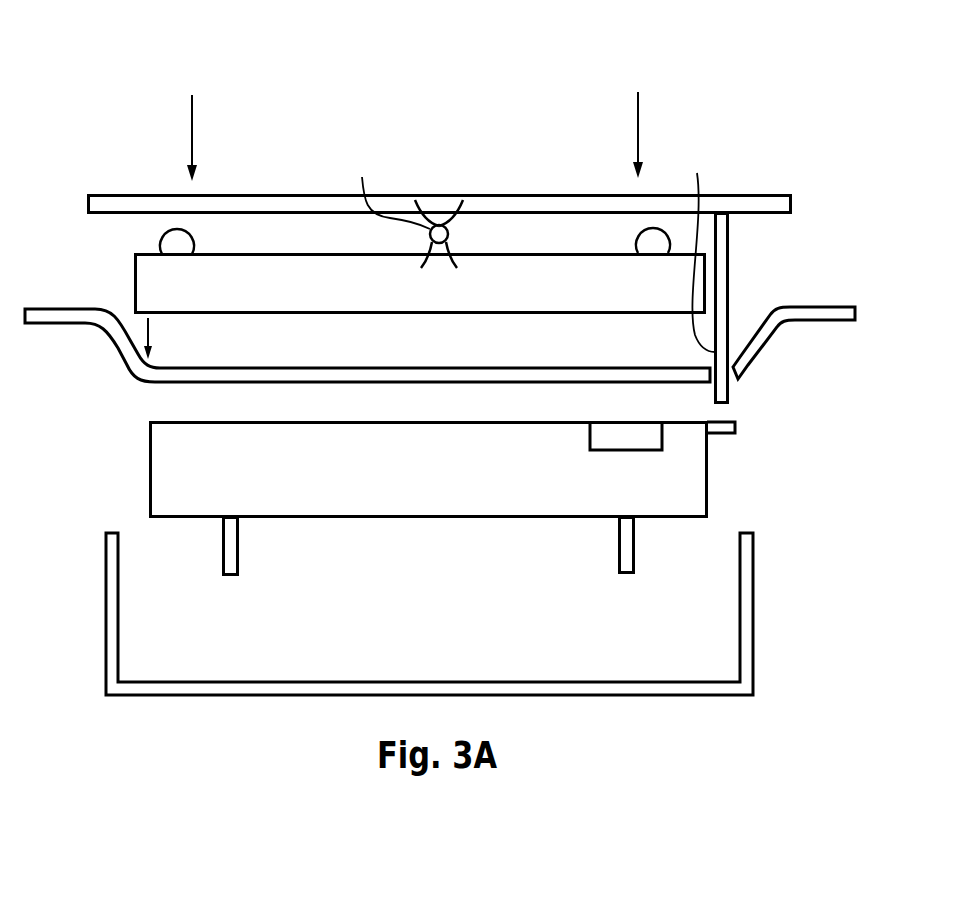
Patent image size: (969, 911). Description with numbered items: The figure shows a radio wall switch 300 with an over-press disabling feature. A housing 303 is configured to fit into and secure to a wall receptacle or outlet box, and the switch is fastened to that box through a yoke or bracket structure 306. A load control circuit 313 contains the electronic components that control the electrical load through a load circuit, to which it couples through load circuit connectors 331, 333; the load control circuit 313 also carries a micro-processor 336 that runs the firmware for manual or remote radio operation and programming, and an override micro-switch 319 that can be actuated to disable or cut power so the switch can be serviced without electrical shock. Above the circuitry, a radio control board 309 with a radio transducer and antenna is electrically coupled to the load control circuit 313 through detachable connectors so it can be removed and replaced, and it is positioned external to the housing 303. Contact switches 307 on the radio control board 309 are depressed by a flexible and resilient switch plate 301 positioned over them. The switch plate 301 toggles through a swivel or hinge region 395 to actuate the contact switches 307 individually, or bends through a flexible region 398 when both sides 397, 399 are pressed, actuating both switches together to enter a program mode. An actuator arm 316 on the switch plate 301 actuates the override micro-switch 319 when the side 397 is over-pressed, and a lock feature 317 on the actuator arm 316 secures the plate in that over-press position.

The radio wall switch 300 is at (130, 68).
The flexible and resilient switch plate 301 is at (155, 195).
The housing 303 is at (754, 605).
The bracket structure 306 is at (842, 311).
The contact switch 307 is at (650, 247).
The radio control board 309 is at (134, 277).
The load control circuit 313 is at (708, 478).
The actuator arm 316 is at (729, 240).
The lock feature 317 is at (696, 251).
The override micro-switch 319 is at (725, 434).
The load circuit connector 331 is at (238, 575).
The load circuit connector 333 is at (618, 573).
The micro-processor 336 is at (590, 450).
The swivel or hinge region 395 is at (390, 191).
The side of the switch plate 397 is at (639, 123).
The flexible region 398 is at (437, 195).
The side of the switch plate 399 is at (191, 126).